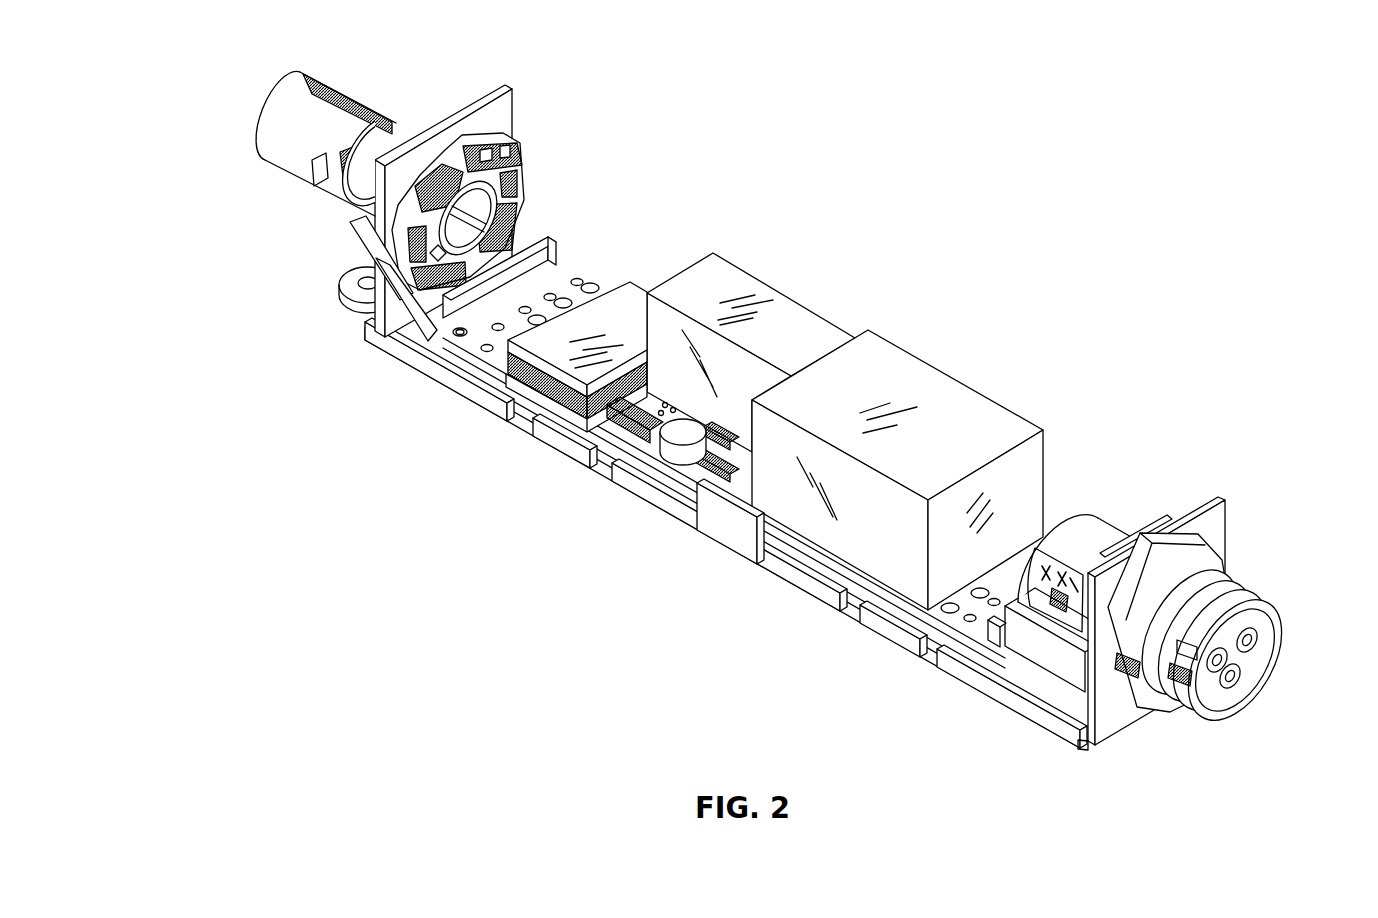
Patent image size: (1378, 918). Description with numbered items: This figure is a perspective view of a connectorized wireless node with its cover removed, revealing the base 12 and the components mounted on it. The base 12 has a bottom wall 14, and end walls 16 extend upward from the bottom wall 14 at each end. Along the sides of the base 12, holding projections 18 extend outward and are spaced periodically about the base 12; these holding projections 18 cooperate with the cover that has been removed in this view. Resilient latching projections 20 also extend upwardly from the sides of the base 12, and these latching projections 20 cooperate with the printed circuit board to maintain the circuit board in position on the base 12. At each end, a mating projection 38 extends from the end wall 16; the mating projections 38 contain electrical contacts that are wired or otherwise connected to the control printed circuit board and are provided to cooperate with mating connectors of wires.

The base 12 is at (827, 643).
The bottom wall 14 is at (395, 357).
The end walls 16 is at (507, 110).
The holding projections 18 is at (560, 437).
The resilient latching projections 20 is at (467, 327).
The mating projections 38 is at (300, 137).